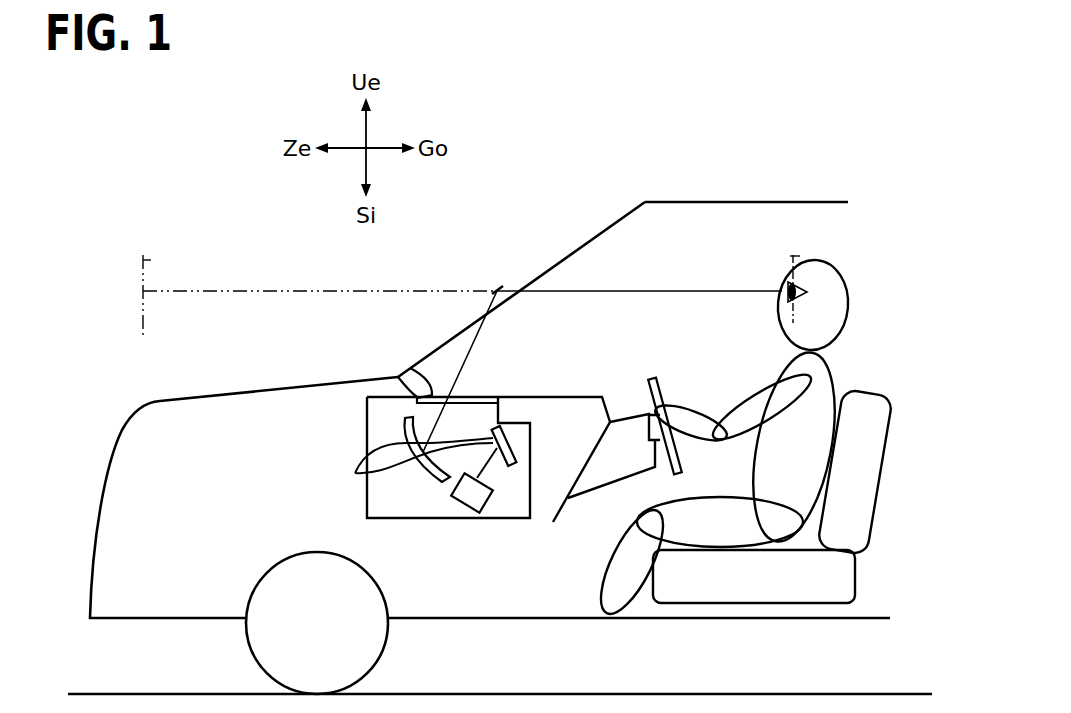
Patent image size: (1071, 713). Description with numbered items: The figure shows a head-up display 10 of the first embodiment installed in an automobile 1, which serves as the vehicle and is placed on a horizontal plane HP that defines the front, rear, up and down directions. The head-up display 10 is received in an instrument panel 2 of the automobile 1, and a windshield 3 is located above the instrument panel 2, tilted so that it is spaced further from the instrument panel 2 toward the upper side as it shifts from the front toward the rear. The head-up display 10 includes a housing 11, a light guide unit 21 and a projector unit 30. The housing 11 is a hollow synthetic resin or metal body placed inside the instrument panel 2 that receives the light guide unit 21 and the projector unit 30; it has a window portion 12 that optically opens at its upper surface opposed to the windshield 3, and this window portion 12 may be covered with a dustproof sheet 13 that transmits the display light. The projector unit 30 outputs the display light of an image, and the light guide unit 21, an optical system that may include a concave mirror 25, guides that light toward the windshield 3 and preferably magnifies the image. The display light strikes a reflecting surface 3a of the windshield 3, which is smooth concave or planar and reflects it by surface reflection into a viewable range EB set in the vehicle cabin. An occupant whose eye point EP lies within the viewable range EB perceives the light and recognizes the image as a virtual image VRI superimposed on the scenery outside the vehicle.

The automobile 1 is at (817, 202).
The instrument panel 2 is at (603, 397).
The windshield 3 is at (567, 248).
The reflecting surface 3a is at (512, 288).
The head-up display 10 is at (419, 469).
The housing 11 is at (367, 510).
The window portion 12 is at (414, 376).
The dustproof sheet 13 is at (493, 394).
The light guide unit 21 is at (357, 472).
The concave mirror 25 is at (418, 424).
The projector unit 30 is at (462, 511).
The eye point EP is at (785, 288).
The viewable range EB is at (797, 256).
The virtual image VRI is at (146, 262).
The horizontal plane HP is at (920, 693).